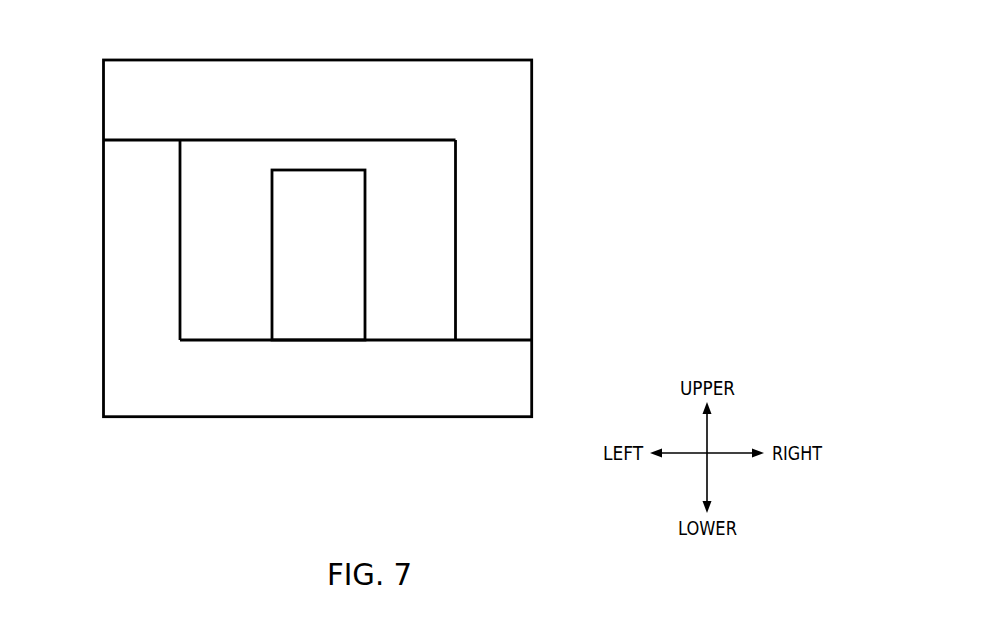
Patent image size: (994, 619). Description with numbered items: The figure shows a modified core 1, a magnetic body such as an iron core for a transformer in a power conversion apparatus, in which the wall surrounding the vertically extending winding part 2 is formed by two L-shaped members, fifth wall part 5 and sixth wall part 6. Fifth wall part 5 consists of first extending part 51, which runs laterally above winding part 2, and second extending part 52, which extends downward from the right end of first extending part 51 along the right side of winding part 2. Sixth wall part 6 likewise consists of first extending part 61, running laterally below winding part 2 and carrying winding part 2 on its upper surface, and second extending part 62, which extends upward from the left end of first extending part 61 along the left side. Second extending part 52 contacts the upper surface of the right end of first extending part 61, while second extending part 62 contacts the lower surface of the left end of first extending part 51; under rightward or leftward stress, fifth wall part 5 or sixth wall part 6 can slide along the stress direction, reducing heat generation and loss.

The core 1 is at (668, 14).
The winding part 2 is at (312, 305).
The fifth wall part 5 is at (353, 214).
The first extending part 51 is at (278, 85).
The second extending part 52 is at (500, 223).
The sixth wall part 6 is at (289, 305).
The first extending part 61 is at (235, 388).
The second extending part 62 is at (121, 256).